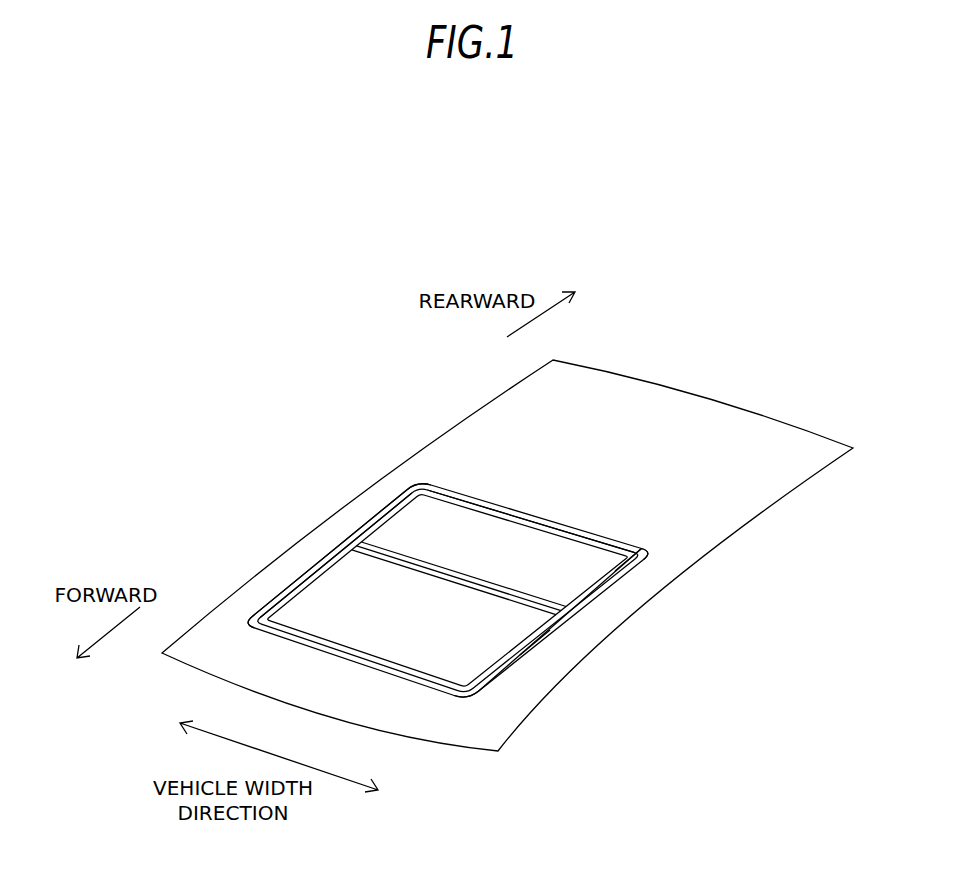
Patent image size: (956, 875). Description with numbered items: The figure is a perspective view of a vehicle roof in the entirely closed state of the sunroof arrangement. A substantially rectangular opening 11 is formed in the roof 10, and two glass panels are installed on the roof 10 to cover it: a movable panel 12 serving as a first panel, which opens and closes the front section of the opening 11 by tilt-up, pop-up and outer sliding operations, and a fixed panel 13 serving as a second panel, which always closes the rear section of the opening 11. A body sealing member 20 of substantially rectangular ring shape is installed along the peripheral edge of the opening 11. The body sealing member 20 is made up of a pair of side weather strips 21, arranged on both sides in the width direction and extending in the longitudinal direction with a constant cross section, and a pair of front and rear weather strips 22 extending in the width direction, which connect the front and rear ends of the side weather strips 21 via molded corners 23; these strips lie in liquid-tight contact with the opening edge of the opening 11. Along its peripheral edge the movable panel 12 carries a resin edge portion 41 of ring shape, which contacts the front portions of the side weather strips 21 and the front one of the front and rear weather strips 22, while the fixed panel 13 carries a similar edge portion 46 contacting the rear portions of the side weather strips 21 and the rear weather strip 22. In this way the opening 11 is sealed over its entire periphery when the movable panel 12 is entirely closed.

The roof 10 is at (433, 449).
The opening 11 is at (568, 530).
The movable panel 12 is at (330, 575).
The fixed panel 13 is at (383, 533).
The body sealing member 20 is at (620, 599).
The side weather strip 21 is at (284, 590).
The front and rear weather strip 22 is at (392, 675).
The molded corner 23 is at (250, 628).
The edge portion 41 is at (526, 644).
The edge portion 46 is at (610, 575).